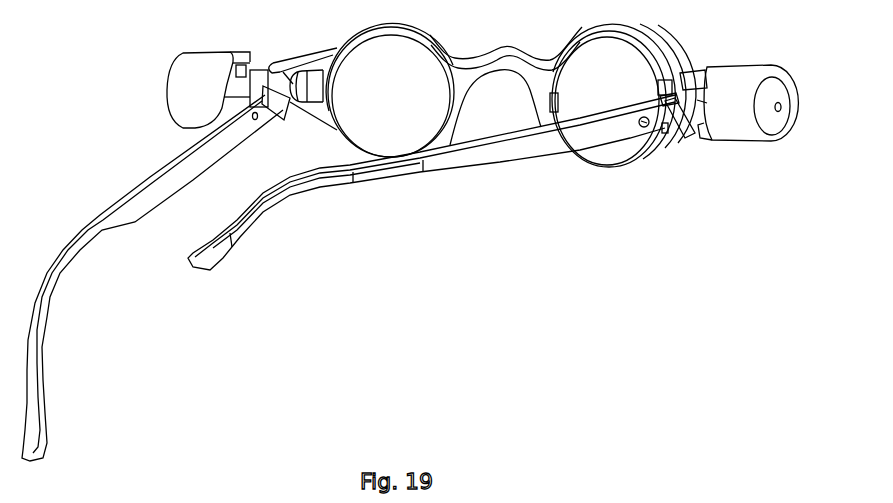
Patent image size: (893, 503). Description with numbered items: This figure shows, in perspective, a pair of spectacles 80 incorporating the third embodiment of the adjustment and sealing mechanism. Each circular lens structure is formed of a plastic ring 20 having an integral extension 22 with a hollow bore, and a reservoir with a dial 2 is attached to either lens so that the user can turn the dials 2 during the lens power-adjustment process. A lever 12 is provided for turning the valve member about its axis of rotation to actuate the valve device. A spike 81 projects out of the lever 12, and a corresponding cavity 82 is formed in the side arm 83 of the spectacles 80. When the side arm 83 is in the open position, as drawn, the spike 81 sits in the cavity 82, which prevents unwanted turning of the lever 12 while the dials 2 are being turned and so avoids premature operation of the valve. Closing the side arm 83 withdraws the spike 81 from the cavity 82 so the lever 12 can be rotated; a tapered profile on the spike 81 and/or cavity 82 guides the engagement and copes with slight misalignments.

The dial 2 is at (183, 103).
The lever 12 is at (690, 133).
The ring 20 is at (616, 165).
The integral extension 22 is at (307, 90).
The spectacles 80 is at (410, 242).
The spike 81 is at (657, 133).
The cavity 82 is at (644, 128).
The side arm 83 is at (507, 166).